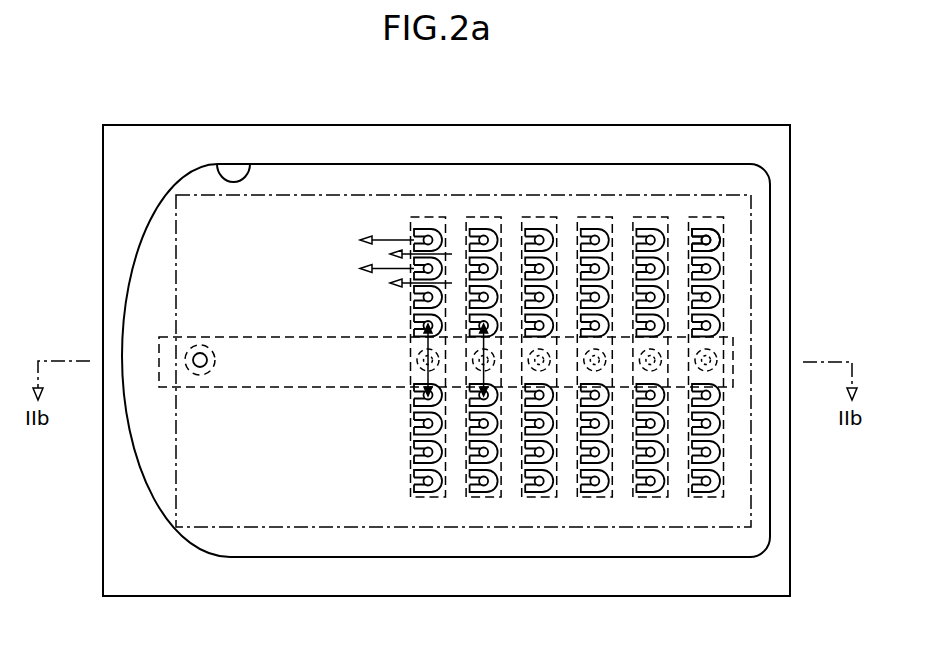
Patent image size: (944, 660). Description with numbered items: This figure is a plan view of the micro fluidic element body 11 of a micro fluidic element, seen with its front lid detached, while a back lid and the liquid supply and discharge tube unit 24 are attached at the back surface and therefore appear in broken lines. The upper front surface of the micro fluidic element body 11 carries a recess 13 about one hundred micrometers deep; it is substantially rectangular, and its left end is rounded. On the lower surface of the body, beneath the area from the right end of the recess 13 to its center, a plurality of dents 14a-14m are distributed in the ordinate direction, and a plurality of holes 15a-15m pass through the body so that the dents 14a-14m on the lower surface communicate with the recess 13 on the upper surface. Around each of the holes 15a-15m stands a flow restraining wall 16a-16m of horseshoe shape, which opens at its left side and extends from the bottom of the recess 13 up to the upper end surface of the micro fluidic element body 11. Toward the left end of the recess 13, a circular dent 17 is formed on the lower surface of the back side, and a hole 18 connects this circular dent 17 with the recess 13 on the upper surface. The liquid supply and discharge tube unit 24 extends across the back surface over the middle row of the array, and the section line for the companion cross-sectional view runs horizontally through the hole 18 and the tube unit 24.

The micro fluidic element body 11 is at (180, 124).
The recess 13 is at (250, 164).
The dent 14m is at (381, 289).
The dent 14a is at (699, 289).
The hole 15a is at (700, 238).
The hole 15m is at (418, 482).
The flow restraining wall 16m is at (428, 497).
The flow restraining wall 16a is at (717, 492).
The circular dent 17 is at (205, 378).
The hole 18 is at (201, 352).
The liquid supply and discharge tube unit 24 is at (733, 352).